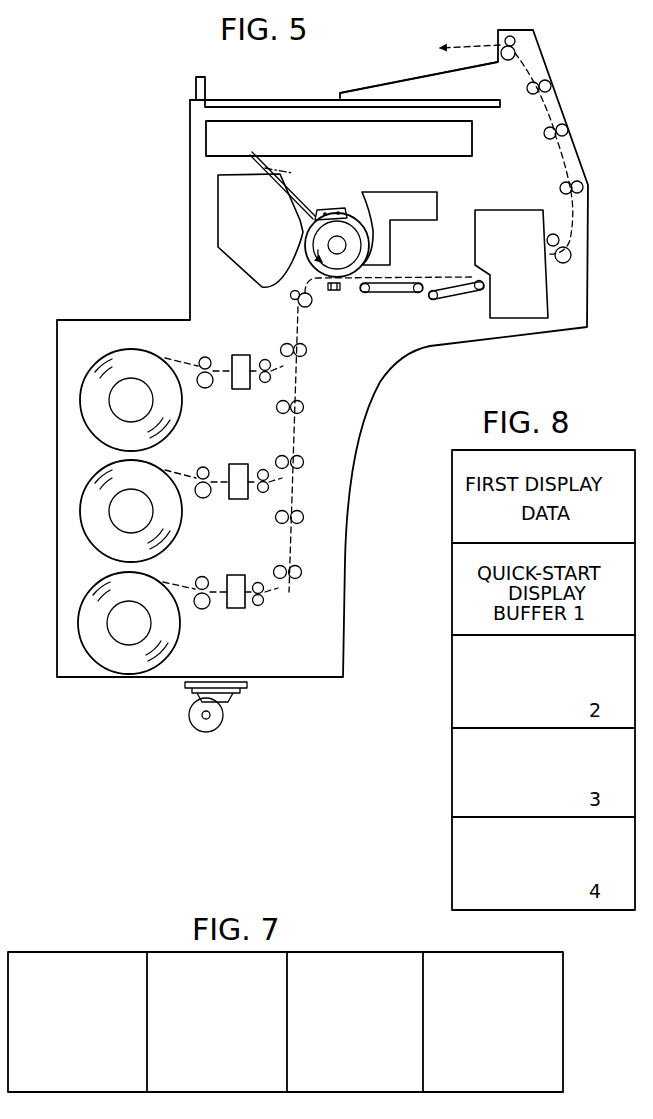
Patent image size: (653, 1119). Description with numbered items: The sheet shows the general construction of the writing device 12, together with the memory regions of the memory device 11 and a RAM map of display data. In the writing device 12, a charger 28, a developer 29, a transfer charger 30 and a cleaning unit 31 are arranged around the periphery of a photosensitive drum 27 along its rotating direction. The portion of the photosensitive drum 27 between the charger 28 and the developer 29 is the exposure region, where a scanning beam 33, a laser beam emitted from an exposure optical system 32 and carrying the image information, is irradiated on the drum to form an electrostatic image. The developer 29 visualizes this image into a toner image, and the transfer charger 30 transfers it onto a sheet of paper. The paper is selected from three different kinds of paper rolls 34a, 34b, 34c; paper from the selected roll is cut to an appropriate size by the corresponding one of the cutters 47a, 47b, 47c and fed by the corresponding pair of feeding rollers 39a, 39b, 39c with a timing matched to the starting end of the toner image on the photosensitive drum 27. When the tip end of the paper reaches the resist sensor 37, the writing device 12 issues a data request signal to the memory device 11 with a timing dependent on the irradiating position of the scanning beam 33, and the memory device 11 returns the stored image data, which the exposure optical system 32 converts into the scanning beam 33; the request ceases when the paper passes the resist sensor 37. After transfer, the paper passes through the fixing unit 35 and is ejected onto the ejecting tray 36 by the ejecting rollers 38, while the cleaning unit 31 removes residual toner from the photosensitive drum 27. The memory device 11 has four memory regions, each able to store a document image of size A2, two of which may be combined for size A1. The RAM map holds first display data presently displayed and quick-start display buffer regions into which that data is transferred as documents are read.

In FIG. 5, the writing device 12 is at (173, 138).
In FIG. 5, the exposure optical system 32 is at (275, 131).
In FIG. 5, the ejecting tray 36 is at (372, 82).
In FIG. 5, the developer 29 is at (220, 212).
In FIG. 5, the scanning beam 33 is at (284, 185).
In FIG. 5, the photosensitive drum 27 is at (355, 243).
In FIG. 5, the charger 28 is at (332, 208).
In FIG. 5, the cleaning unit 31 is at (437, 200).
In FIG. 5, the transfer charger 30 is at (337, 291).
In FIG. 5, the resist sensor 37 is at (306, 312).
In FIG. 5, the fixing unit 35 is at (508, 210).
In FIG. 5, the ejecting rollers 38 is at (537, 101).
In FIG. 5, the paper roll 34a is at (82, 402).
In FIG. 5, the paper roll 34b is at (82, 512).
In FIG. 5, the paper roll 34c is at (80, 623).
In FIG. 5, the cutter 47a is at (242, 355).
In FIG. 5, the cutter 47b is at (240, 463).
In FIG. 5, the cutter 47c is at (233, 575).
In FIG. 5, the pair of feeding rollers 39a is at (282, 364).
In FIG. 5, the pair of feeding rollers 39b is at (281, 479).
In FIG. 5, the pair of feeding rollers 39c is at (276, 589).
In FIG. 7, the memory device 11 is at (95, 950).